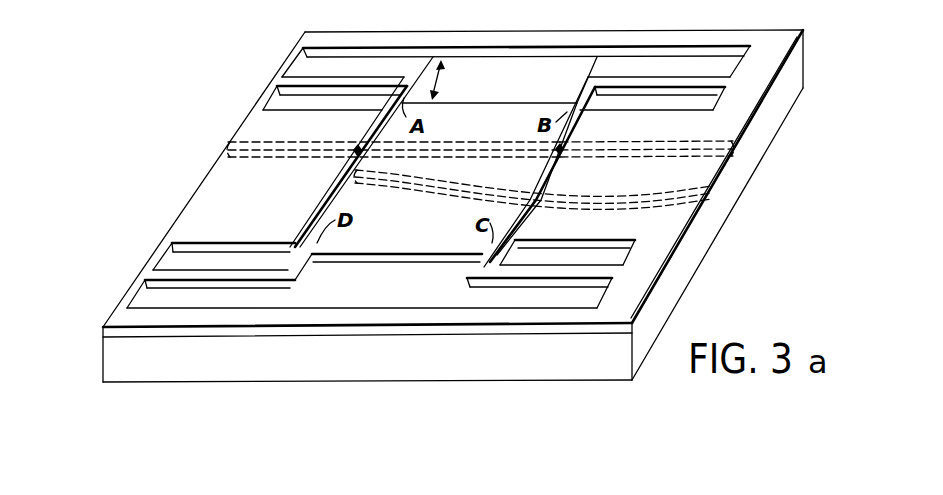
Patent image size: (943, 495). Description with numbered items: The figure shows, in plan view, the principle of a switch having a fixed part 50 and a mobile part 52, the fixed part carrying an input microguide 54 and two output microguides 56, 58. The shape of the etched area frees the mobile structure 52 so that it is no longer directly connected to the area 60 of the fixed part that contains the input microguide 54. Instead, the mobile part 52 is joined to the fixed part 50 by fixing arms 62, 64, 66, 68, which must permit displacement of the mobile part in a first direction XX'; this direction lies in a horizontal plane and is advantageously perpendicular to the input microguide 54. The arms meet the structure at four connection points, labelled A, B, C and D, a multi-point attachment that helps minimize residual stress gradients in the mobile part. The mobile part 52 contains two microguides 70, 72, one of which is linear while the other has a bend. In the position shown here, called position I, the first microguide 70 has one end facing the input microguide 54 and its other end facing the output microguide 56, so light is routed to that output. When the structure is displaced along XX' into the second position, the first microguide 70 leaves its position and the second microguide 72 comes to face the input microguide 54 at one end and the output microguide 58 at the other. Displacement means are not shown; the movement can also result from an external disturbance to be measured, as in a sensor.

The fixed part 50 is at (677, 225).
The mobile part 52 is at (470, 107).
The input microguide 54 is at (257, 142).
The output microguide 56 is at (717, 140).
The output microguide 58 is at (680, 188).
The area of the fixed part 60 is at (196, 193).
The fixing arm 62 is at (317, 82).
The fixing arm 64 is at (660, 80).
The fixing arm 66 is at (175, 275).
The fixing arm 68 is at (600, 263).
The first microguide 70 is at (464, 142).
The second microguide 72 is at (430, 194).